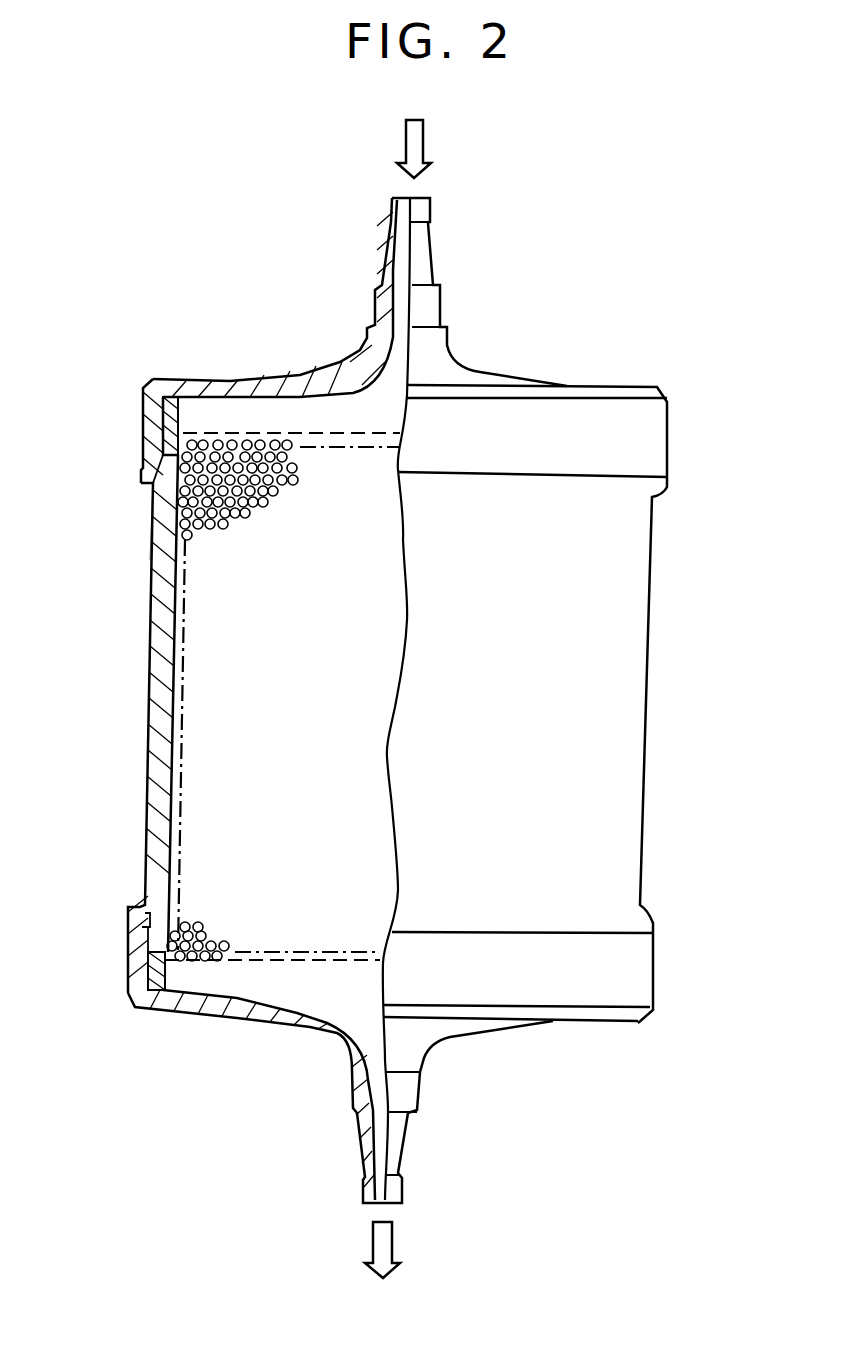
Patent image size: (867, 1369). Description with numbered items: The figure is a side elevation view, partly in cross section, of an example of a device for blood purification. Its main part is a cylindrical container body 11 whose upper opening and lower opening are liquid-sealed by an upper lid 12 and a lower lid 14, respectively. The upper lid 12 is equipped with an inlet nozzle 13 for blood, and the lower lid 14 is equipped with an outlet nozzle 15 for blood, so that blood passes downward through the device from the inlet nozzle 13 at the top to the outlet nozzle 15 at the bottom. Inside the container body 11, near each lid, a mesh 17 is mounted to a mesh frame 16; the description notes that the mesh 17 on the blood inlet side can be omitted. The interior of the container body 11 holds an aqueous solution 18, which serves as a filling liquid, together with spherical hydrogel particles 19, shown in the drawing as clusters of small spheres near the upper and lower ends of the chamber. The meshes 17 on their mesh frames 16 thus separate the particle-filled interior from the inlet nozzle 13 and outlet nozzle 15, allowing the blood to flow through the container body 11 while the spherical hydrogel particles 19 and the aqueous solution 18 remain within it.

The cylindrical container body 11 is at (148, 712).
The upper lid 12 is at (292, 373).
The inlet nozzle 13 is at (422, 262).
The lower lid 14 is at (312, 1020).
The outlet nozzle 15 is at (398, 1148).
The mesh frame 16 is at (175, 387).
The mesh 17 is at (245, 433).
The aqueous solution 18 is at (213, 533).
The spherical hydrogel particles 19 is at (152, 500).